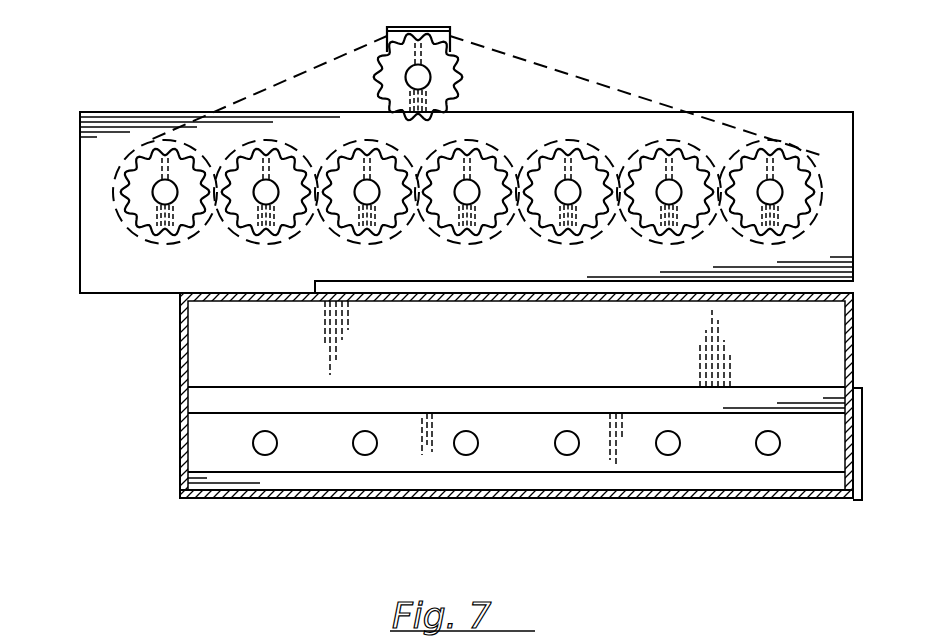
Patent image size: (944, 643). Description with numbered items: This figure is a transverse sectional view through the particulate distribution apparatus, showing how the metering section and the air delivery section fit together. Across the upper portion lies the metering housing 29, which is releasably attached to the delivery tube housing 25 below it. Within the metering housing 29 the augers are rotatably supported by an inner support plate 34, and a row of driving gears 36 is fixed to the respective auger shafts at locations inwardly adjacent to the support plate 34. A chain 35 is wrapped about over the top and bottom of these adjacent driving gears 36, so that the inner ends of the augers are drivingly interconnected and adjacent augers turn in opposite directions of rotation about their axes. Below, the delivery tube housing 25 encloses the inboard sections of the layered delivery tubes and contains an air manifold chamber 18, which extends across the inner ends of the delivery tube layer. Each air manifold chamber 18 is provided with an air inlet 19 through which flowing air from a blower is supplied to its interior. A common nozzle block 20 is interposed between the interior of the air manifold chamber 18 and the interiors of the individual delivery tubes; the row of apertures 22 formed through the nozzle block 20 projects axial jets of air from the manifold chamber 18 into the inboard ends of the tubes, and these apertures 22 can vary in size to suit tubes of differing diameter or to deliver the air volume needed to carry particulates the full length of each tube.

The air manifold chamber 18 is at (207, 323).
The air inlet 19 is at (185, 400).
The nozzle block 20 is at (395, 422).
The apertures 22 is at (557, 437).
The delivery tube housing 25 is at (586, 497).
The metering housing 29 is at (786, 111).
The inner support plate 34 is at (97, 268).
The chain 35 is at (573, 72).
The driving gears 36 is at (538, 207).